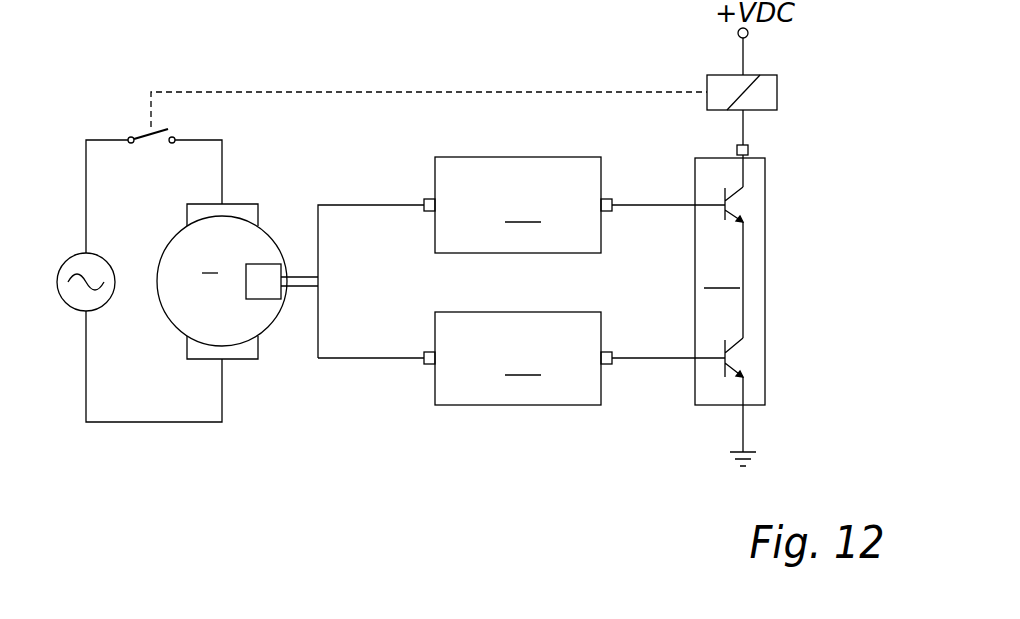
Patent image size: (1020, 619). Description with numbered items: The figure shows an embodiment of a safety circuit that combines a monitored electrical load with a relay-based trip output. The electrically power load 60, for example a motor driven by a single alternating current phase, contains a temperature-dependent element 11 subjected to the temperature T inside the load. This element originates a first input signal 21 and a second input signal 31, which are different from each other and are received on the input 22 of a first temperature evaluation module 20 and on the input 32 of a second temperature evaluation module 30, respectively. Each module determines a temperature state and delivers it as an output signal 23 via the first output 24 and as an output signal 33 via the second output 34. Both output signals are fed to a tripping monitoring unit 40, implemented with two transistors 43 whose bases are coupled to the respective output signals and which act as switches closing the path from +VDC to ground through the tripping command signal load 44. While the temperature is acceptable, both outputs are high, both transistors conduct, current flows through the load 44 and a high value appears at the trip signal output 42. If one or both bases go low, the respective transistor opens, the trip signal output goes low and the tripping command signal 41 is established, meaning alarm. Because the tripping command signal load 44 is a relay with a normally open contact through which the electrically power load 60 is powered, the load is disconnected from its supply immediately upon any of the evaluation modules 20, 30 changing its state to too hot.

The temperature-dependent element 11 is at (282, 264).
The first temperature evaluation module 20 is at (518, 205).
The first input signal 21 is at (360, 204).
The input 22 is at (428, 198).
The output signal 23 is at (647, 204).
The first output 24 is at (606, 198).
The second temperature evaluation module 30 is at (518, 358).
The second input signal 31 is at (357, 360).
The input 32 is at (428, 365).
The output signal 33 is at (647, 360).
The second output 34 is at (607, 365).
The tripping monitoring unit 40 is at (730, 281).
The tripping command signal 41 is at (744, 118).
The trip signal output 42 is at (750, 150).
The transistors 43 is at (723, 218).
The tripping command signal load 44 is at (706, 78).
The electrically power load 60 is at (268, 224).